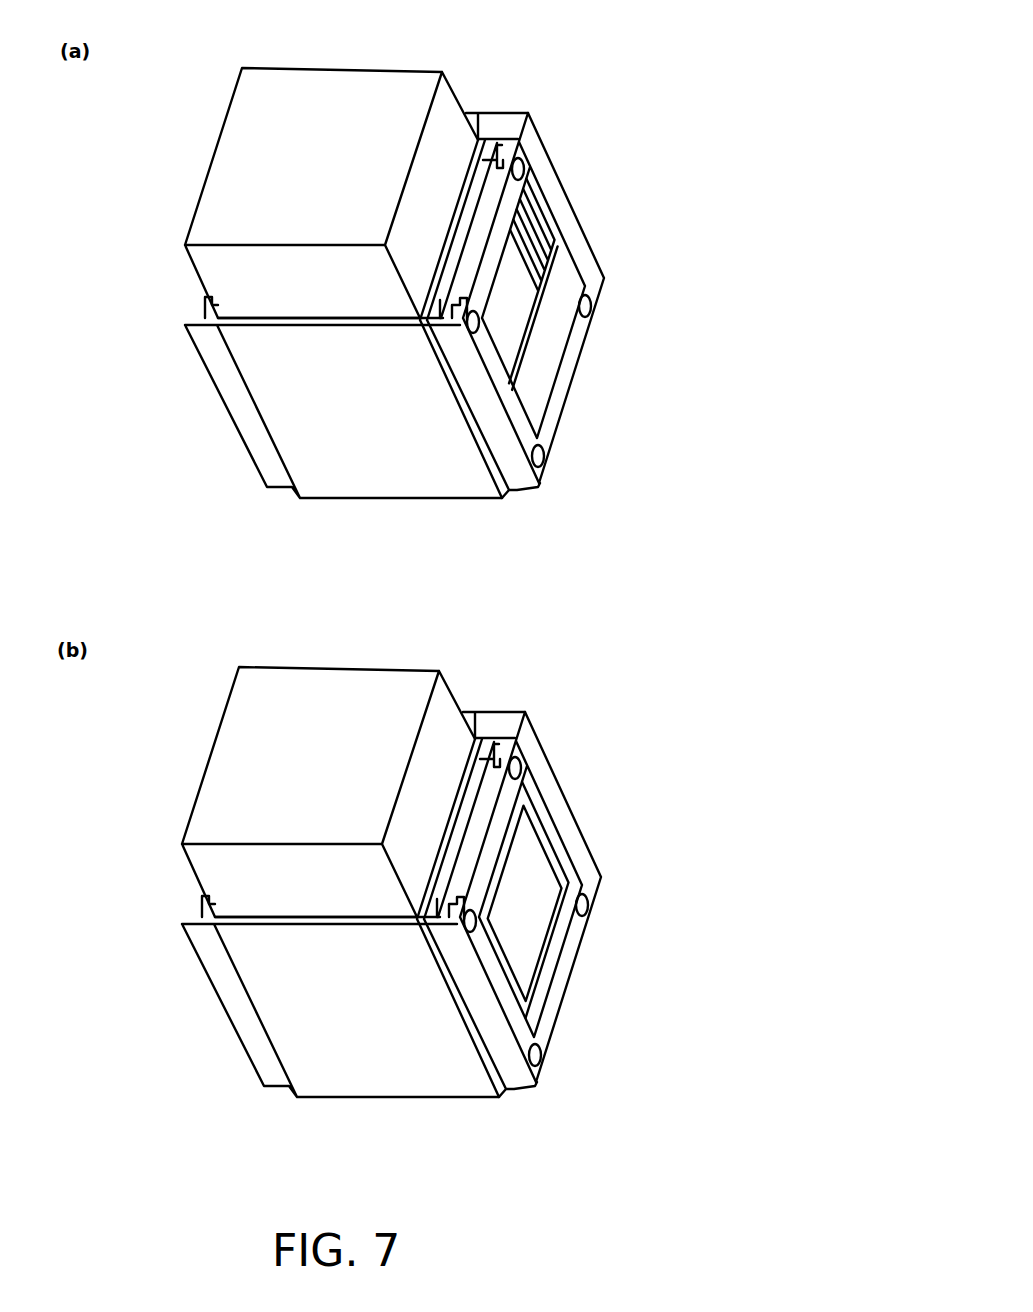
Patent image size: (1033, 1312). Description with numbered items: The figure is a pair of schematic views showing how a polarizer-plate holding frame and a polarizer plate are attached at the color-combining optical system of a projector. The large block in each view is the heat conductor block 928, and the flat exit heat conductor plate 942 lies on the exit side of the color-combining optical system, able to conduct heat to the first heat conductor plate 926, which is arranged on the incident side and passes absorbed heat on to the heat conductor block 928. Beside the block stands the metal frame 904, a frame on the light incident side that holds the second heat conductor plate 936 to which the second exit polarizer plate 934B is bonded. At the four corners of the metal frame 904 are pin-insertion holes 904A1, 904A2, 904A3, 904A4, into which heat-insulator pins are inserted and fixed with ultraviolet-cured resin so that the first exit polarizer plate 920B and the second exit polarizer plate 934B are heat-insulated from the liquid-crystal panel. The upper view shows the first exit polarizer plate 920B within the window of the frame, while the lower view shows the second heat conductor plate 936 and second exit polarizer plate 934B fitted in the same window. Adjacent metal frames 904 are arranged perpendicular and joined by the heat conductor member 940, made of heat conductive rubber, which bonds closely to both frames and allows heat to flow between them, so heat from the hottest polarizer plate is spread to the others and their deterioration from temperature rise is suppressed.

The metal frame 904 is at (478, 112).
The first heat conductor plate 926 is at (493, 112).
The heat conductor member 940 is at (525, 110).
The heat conductor block 928 is at (232, 152).
The exit heat conductor plate 942 is at (290, 432).
The first exit polarizer plate 920B is at (527, 287).
The second heat conductor plate 936 is at (598, 900).
The second exit polarizer plate 934B is at (590, 913).
The pin-insertion hole 904A1 is at (476, 334).
The pin-insertion hole 904A2 is at (524, 171).
The pin-insertion hole 904A3 is at (542, 468).
The pin-insertion hole 904A4 is at (591, 307).